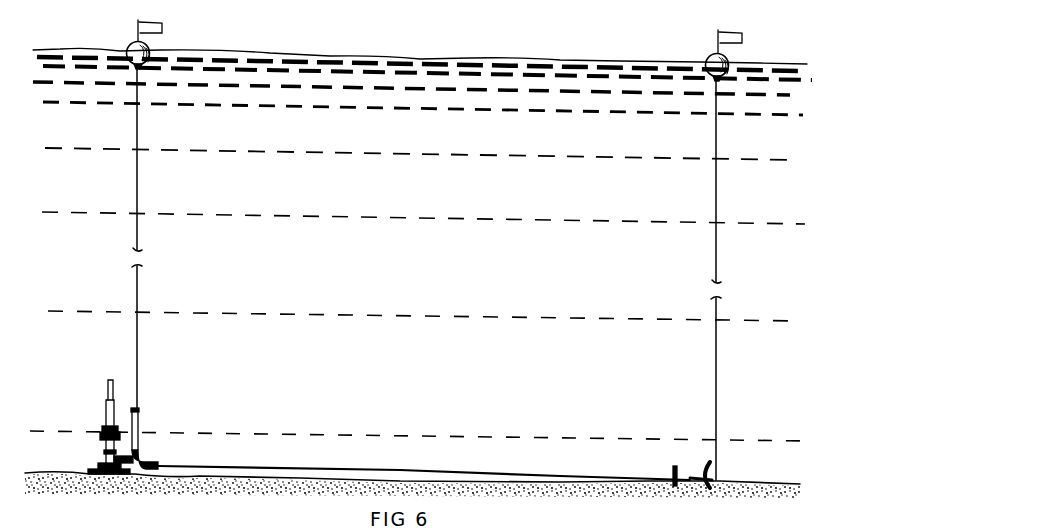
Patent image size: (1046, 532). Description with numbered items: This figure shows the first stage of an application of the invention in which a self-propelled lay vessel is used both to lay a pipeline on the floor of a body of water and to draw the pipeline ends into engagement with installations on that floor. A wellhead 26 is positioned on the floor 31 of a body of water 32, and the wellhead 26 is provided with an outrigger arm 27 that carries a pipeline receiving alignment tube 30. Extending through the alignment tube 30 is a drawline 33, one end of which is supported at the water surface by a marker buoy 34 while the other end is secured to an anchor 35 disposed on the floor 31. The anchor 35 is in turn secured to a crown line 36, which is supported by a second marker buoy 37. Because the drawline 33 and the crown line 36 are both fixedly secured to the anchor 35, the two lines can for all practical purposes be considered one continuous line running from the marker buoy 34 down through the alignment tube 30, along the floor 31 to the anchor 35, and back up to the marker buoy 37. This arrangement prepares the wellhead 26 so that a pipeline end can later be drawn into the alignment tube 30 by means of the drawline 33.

The wellhead 26 is at (103, 429).
The outrigger arm 27 is at (118, 453).
The alignment tube 30 is at (144, 460).
The floor 31 is at (768, 482).
The body of water 32 is at (424, 59).
The drawline 33 is at (141, 140).
The marker buoy 34 is at (130, 45).
The anchor 35 is at (688, 474).
The crown line 36 is at (715, 143).
The marker buoy 37 is at (710, 55).